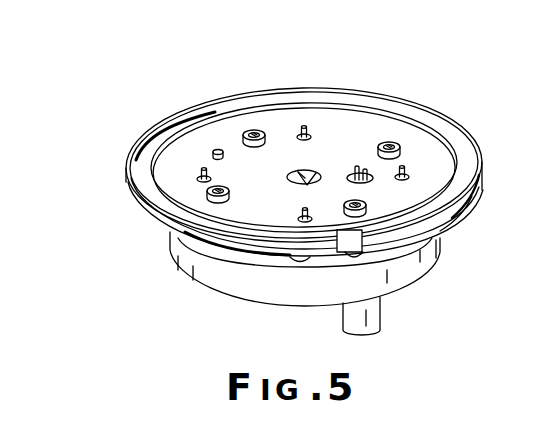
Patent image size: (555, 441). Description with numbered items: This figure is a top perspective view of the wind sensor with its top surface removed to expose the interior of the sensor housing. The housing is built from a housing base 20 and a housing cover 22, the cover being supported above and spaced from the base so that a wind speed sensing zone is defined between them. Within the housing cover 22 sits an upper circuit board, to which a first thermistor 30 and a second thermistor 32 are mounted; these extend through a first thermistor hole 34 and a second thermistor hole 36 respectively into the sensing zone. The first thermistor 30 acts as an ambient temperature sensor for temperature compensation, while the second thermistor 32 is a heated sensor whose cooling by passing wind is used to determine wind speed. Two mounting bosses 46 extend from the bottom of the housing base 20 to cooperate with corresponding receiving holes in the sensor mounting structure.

The housing base 20 is at (217, 300).
The housing cover 22 is at (182, 105).
The first thermistor 30 is at (364, 166).
The second thermistor 32 is at (292, 170).
The first thermistor hole 34 is at (373, 178).
The second thermistor hole 36 is at (313, 170).
The mounting boss 46 is at (536, 11).